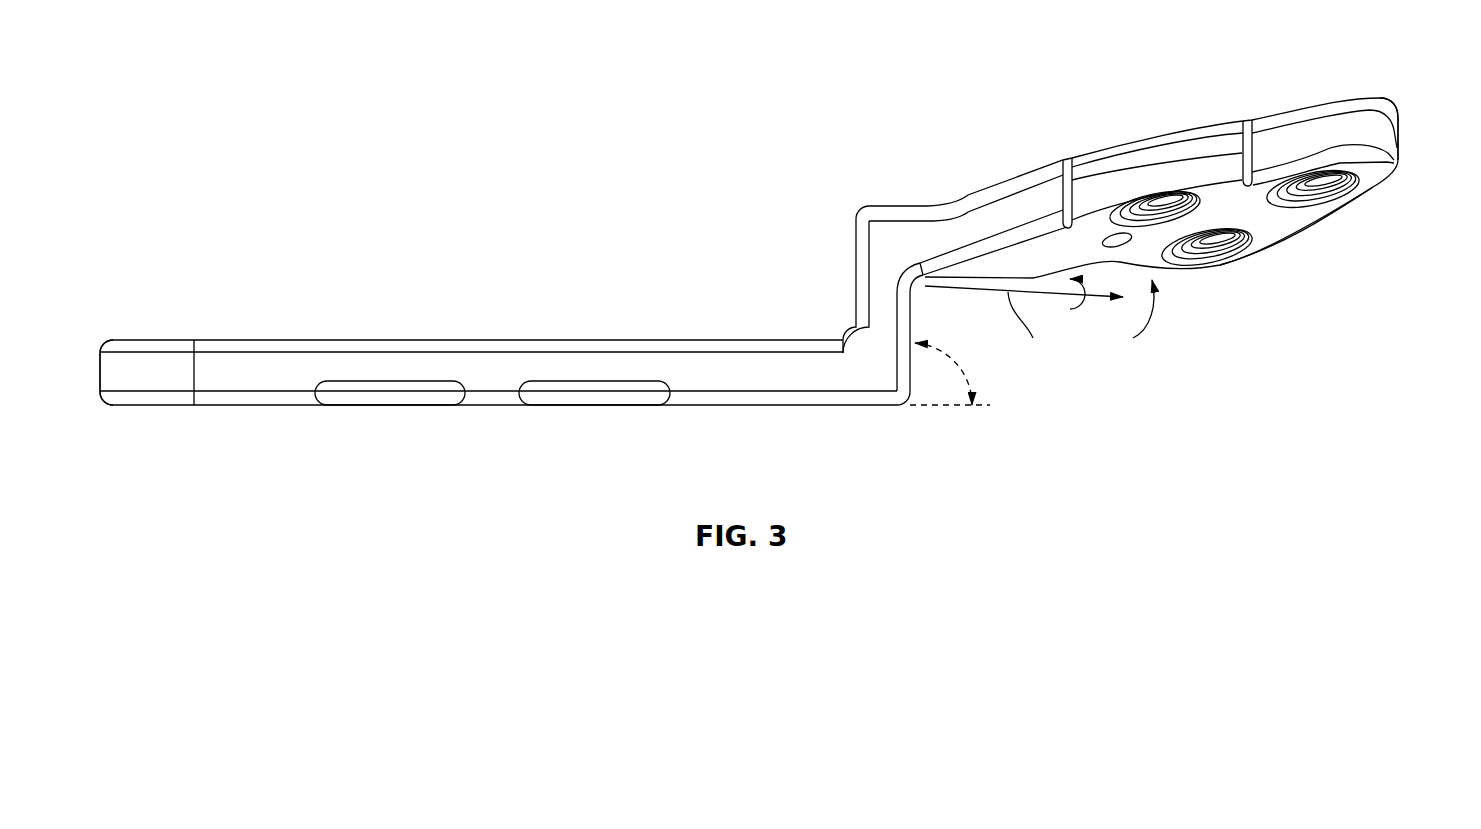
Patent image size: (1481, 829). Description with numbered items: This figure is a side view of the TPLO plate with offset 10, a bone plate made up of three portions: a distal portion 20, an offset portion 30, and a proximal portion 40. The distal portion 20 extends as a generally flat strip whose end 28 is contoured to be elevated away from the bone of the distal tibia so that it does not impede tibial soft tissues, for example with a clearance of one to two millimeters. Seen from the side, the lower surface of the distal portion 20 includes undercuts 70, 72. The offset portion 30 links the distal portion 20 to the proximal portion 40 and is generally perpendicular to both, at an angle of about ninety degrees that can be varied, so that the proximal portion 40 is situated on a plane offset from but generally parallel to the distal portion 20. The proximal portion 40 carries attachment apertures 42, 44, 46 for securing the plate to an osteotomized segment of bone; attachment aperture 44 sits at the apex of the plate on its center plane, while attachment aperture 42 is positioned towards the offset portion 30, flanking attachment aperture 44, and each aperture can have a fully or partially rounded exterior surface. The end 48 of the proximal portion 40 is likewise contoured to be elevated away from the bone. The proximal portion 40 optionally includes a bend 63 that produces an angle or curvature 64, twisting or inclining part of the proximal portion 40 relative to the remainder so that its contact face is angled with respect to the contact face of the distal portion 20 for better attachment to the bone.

The TPLO plate with offset 10 is at (330, 66).
The distal portion 20 is at (498, 378).
The end of the distal portion 28 is at (104, 409).
The offset portion 30 is at (883, 317).
The proximal portion 40 is at (1195, 194).
The attachment aperture 42 is at (1198, 265).
The attachment aperture 44 is at (1320, 183).
The attachment aperture 46 is at (1153, 200).
The end of the proximal portion 48 is at (1394, 159).
The bend 63 is at (897, 205).
The angle or curvature 64 is at (1259, 269).
The undercut 70 is at (395, 395).
The undercut 72 is at (592, 395).